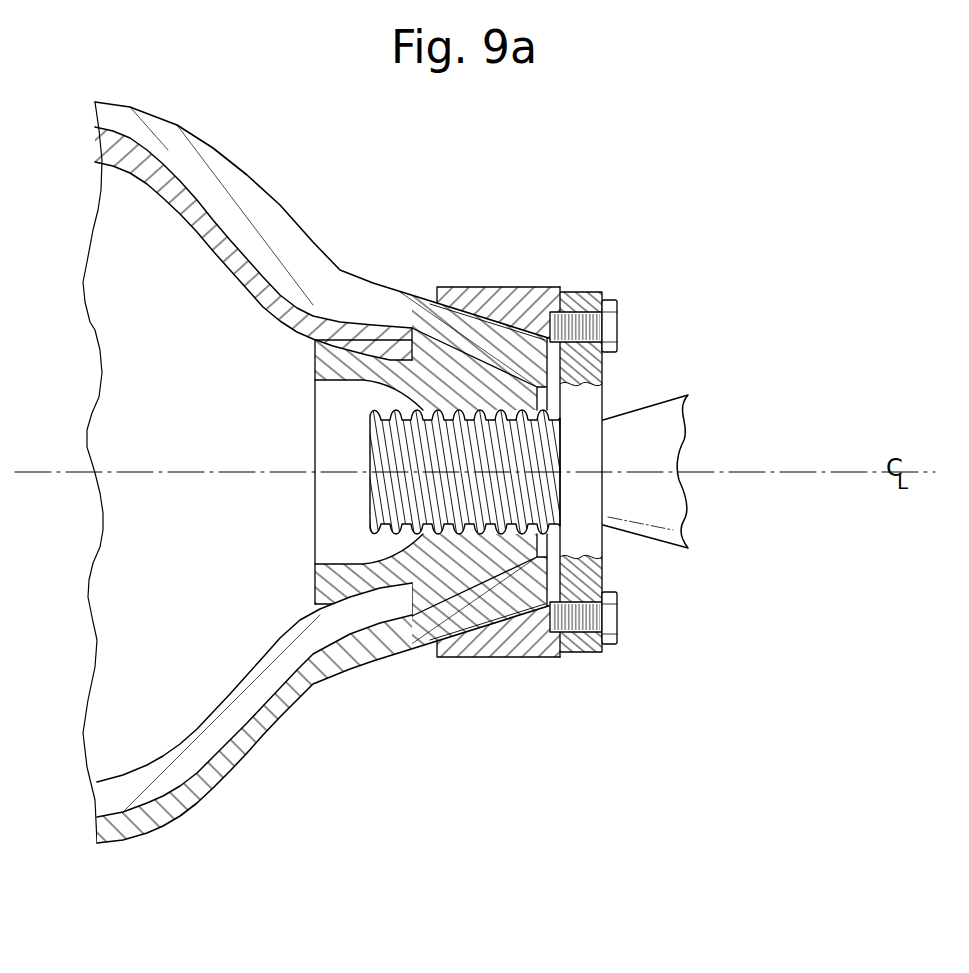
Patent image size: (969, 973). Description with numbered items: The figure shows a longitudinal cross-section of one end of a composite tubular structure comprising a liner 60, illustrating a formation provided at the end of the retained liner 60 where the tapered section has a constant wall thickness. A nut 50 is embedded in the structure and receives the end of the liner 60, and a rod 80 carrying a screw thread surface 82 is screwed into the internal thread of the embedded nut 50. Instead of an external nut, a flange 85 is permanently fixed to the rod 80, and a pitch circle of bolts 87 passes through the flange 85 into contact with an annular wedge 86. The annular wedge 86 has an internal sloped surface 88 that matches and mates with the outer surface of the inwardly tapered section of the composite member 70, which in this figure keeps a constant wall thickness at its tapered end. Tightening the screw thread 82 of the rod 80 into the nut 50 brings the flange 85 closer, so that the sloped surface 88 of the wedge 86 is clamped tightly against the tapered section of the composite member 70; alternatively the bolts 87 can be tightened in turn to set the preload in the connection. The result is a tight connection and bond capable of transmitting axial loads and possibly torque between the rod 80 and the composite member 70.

The nut 50 is at (382, 375).
The liner 60 is at (200, 202).
The composite member 70 is at (351, 660).
The rod 80 is at (662, 438).
The screw thread surface 82 is at (372, 447).
The flange 85 is at (597, 292).
The annular wedge 86 is at (510, 292).
The bolts 87 is at (610, 324).
The internal sloped surface 88 is at (486, 630).